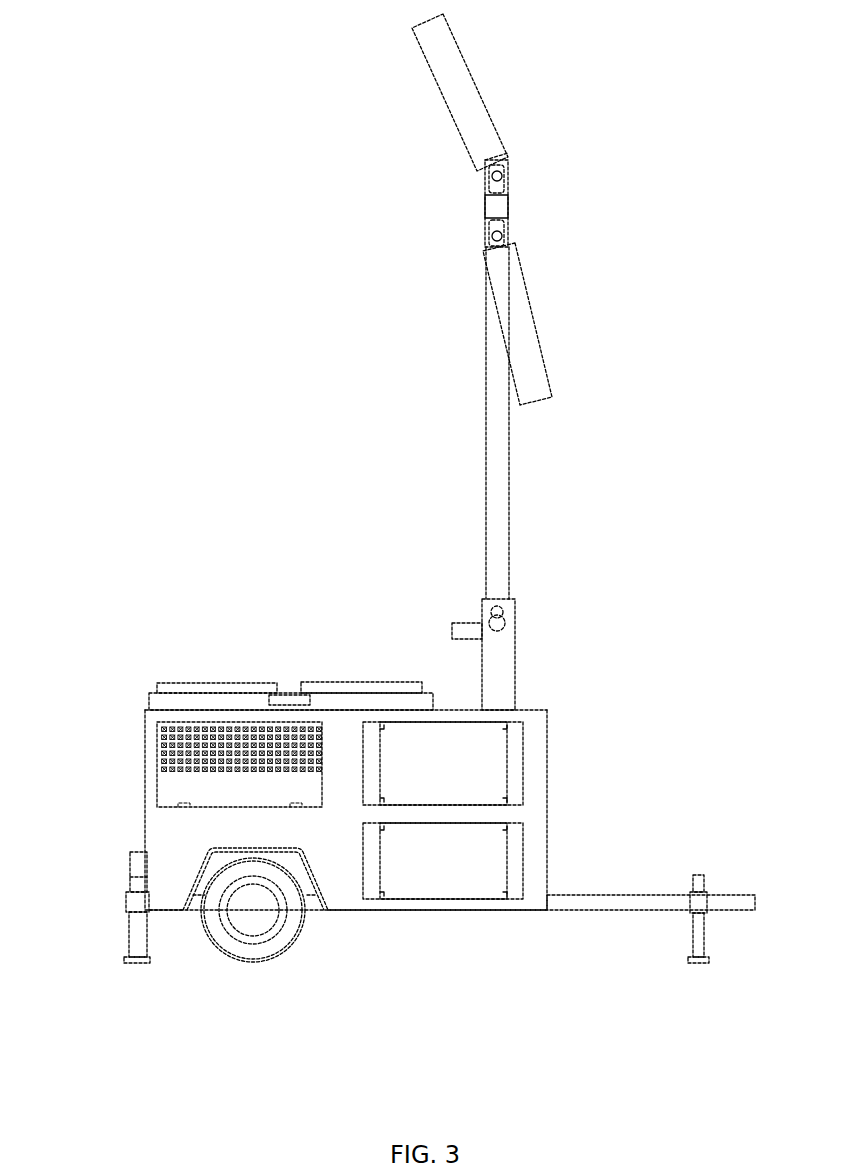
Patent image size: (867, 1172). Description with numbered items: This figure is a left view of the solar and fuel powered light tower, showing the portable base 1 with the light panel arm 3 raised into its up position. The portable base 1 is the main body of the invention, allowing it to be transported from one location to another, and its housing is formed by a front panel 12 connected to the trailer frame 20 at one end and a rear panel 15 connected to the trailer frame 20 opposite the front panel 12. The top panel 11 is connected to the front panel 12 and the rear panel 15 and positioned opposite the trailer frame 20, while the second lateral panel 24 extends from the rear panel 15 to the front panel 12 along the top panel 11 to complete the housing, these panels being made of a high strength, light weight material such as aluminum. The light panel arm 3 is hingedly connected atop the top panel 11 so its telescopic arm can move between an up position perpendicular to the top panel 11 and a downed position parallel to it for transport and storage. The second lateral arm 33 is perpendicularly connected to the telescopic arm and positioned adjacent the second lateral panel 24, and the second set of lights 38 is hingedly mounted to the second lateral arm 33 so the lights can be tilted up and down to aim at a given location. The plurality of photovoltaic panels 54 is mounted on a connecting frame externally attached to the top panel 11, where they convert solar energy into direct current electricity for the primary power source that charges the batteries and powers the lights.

The portable base 1 is at (90, 828).
The light panel arm 3 is at (586, 378).
The top panel 11 is at (469, 710).
The front panel 12 is at (547, 812).
The rear panel 15 is at (146, 823).
The trailer frame 20 is at (315, 907).
The second lateral panel 24 is at (348, 766).
The second lateral arm 33 is at (504, 206).
The second set of lights 38 is at (457, 105).
The plurality of photovoltaic panels 54 is at (237, 687).